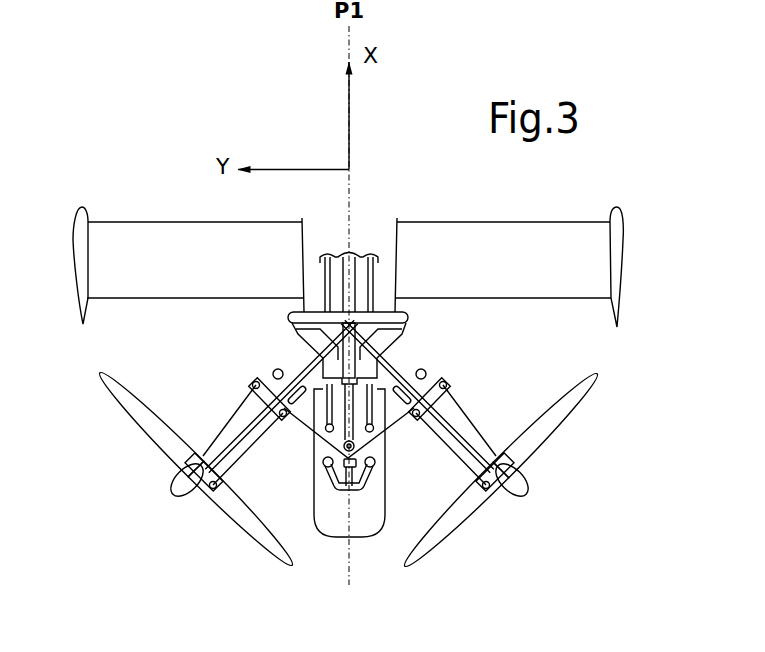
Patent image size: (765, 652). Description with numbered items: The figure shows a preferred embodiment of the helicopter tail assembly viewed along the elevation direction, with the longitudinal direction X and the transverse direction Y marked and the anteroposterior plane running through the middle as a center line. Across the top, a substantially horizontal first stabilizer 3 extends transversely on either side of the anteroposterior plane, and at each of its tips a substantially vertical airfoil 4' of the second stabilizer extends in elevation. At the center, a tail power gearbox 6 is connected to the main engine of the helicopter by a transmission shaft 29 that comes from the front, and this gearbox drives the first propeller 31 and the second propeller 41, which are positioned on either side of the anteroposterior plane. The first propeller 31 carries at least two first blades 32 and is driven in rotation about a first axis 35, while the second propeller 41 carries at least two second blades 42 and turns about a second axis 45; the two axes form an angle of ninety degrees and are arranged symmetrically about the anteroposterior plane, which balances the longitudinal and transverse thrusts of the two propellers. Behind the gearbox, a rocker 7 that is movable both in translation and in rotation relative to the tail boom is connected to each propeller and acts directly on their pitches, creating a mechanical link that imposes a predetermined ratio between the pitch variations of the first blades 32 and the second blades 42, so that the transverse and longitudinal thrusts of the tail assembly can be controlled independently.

The first stabilizer 3 is at (131, 250).
The airfoil of the second stabilizer 4' is at (66, 238).
The transmission shaft 29 is at (349, 254).
The tail power gearbox 6 is at (401, 339).
The rocker 7 is at (389, 414).
The first axis 35 is at (231, 434).
The second axis 45 is at (475, 440).
The first propeller 31 is at (122, 428).
The first blades 32 is at (245, 520).
The second propeller 41 is at (473, 528).
The second blades 42 is at (572, 408).